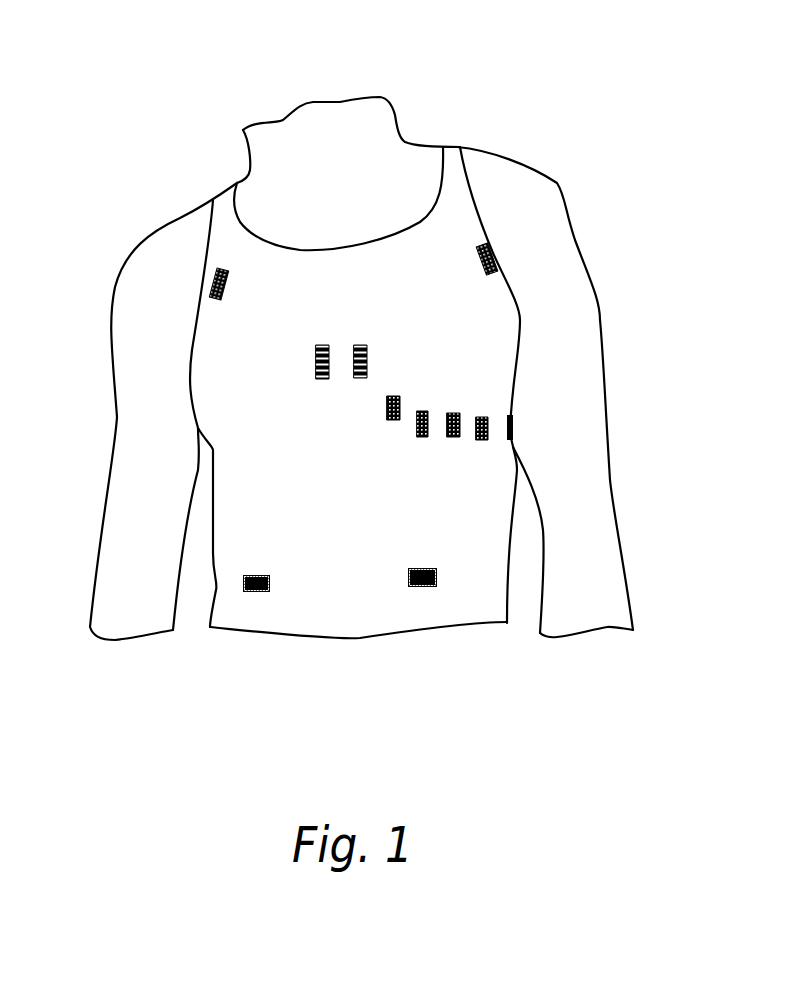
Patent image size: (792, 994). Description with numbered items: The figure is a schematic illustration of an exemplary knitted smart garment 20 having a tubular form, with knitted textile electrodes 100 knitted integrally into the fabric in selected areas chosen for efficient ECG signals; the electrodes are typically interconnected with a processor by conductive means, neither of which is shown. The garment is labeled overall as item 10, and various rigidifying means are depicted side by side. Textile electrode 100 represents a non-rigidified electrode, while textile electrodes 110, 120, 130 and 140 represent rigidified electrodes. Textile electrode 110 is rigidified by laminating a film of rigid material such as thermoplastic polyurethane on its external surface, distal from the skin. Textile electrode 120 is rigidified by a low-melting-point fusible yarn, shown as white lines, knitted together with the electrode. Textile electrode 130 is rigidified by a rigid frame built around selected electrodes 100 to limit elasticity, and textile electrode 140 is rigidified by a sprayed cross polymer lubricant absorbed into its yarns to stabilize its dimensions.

The garment 10 is at (290, 102).
The knitted smart garment 20 is at (486, 190).
The textile electrode 100 is at (513, 425).
The textile electrode 110 is at (207, 283).
The textile electrode 120 is at (360, 378).
The textile electrode 130 is at (263, 592).
The textile electrode 140 is at (390, 420).